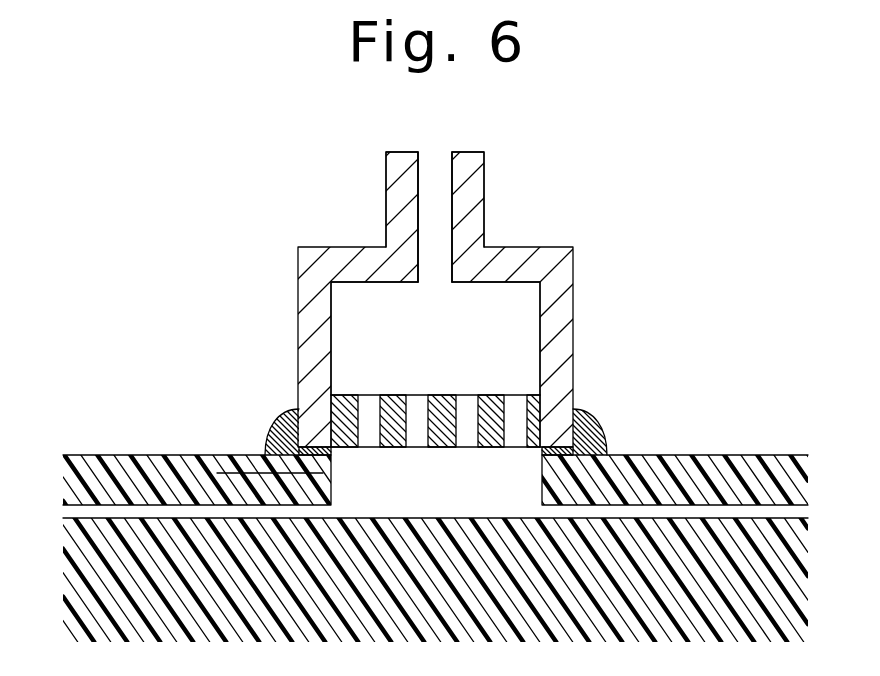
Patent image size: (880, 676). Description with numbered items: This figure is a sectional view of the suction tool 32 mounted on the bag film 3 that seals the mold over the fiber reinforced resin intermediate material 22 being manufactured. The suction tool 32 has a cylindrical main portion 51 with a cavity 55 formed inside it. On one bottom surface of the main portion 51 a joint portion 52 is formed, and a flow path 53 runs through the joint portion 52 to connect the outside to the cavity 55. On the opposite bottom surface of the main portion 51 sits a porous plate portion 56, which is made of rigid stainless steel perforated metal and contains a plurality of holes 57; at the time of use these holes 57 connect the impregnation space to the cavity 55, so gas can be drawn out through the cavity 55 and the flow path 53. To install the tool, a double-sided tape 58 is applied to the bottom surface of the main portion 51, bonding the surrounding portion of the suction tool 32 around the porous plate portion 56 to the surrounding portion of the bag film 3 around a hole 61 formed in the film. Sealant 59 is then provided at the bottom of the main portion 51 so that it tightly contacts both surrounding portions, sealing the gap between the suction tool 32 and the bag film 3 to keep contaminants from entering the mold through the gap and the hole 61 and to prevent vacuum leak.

The bag film 3 is at (685, 475).
The fiber reinforced resin intermediate material 22 is at (727, 518).
The suction tool 32 is at (614, 288).
The main portion 51 is at (573, 355).
The joint portion 52 is at (485, 183).
The flow path 53 is at (434, 158).
The cavity 55 is at (372, 307).
The porous plate portion 56 is at (390, 403).
The holes 57 is at (371, 403).
The double-sided tape 58 is at (330, 453).
The sealant 59 is at (266, 433).
The hole 61 is at (217, 473).